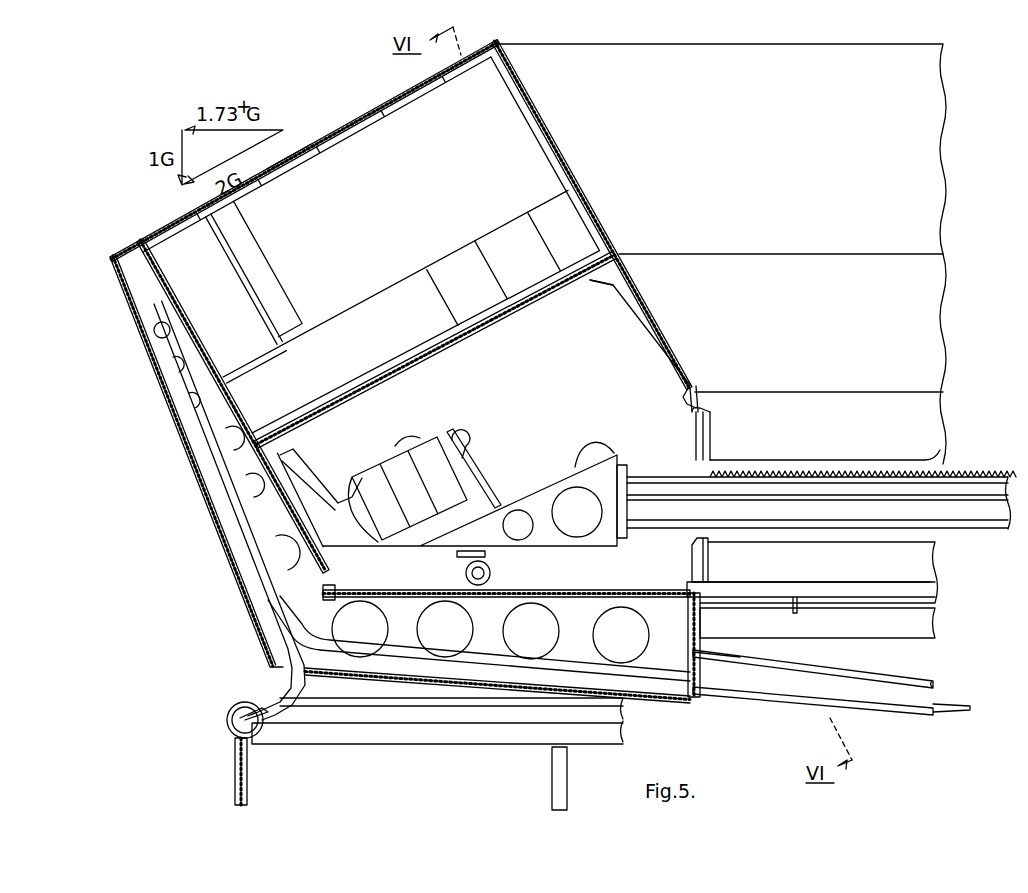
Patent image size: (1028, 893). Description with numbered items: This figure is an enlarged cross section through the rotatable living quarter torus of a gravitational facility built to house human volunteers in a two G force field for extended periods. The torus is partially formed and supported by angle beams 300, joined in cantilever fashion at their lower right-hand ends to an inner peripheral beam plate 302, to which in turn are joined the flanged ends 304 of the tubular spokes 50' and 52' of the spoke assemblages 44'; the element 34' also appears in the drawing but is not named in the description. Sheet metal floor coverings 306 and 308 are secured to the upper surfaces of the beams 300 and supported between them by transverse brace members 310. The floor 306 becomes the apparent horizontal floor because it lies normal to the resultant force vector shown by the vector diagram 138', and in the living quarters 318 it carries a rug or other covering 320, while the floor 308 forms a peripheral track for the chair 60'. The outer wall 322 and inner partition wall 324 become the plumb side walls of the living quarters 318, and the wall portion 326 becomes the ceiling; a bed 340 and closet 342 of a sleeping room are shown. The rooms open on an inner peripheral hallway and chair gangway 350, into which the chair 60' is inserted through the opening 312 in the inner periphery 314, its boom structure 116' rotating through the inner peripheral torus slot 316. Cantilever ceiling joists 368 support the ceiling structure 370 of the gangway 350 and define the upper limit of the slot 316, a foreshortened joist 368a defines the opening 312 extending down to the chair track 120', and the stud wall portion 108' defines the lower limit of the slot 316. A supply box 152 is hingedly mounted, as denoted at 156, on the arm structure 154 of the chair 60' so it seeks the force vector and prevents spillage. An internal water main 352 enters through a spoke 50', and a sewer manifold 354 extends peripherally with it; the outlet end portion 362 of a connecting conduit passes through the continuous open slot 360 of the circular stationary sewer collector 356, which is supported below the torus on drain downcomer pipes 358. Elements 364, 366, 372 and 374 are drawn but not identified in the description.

The housing wall 34' is at (748, 254).
The vector diagram 138' is at (295, 129).
The outer wall 322 is at (370, 112).
The living quarters 318 is at (506, 112).
The wall portion 326 is at (580, 175).
The closet 342 is at (448, 262).
The bed 340 is at (262, 273).
The rug or other suitable covering 320 is at (200, 345).
The roller 372 is at (150, 331).
The rollers 374 is at (185, 400).
The sewer manifold 354 is at (237, 522).
The angle beams 300 is at (222, 568).
The inner peripheral hallway and chair gangway 350 is at (318, 485).
The supply box 152 is at (355, 470).
The hinge mounting 156 is at (462, 438).
The arm structure 154 is at (478, 462).
The chair 60' is at (488, 484).
The foreshortened ceiling joist 368a is at (637, 317).
The inner wall 364 is at (648, 367).
The cantilever ceiling joists 368 is at (706, 421).
The opening 312 is at (712, 445).
The ceiling structure 370 is at (925, 321).
The inner periphery 314 is at (925, 413).
The inner peripheral torus slot 316 is at (945, 451).
The boom structure 116' is at (820, 514).
The post 366 is at (675, 558).
The chair track 120' is at (819, 568).
The stud wall portion 108' is at (845, 577).
The tubular spoke 52' is at (844, 623).
The spoke assemblages 44' is at (840, 664).
The tubular spoke 50' is at (838, 694).
The flanged ends 304 is at (700, 651).
The floor covering 306 is at (330, 573).
The floor covering 308 is at (400, 590).
The transverse brace members 310 is at (572, 592).
The inner peripheral beam plate 302 is at (700, 680).
The internal water main 352 is at (673, 705).
The outlet end portion 362 is at (270, 710).
The circular stationary sewer collector 356 is at (430, 723).
The continuous open slot 360 is at (485, 720).
The drain downcomer pipes 358 is at (235, 780).
The inner partition wall 324 is at (433, 354).